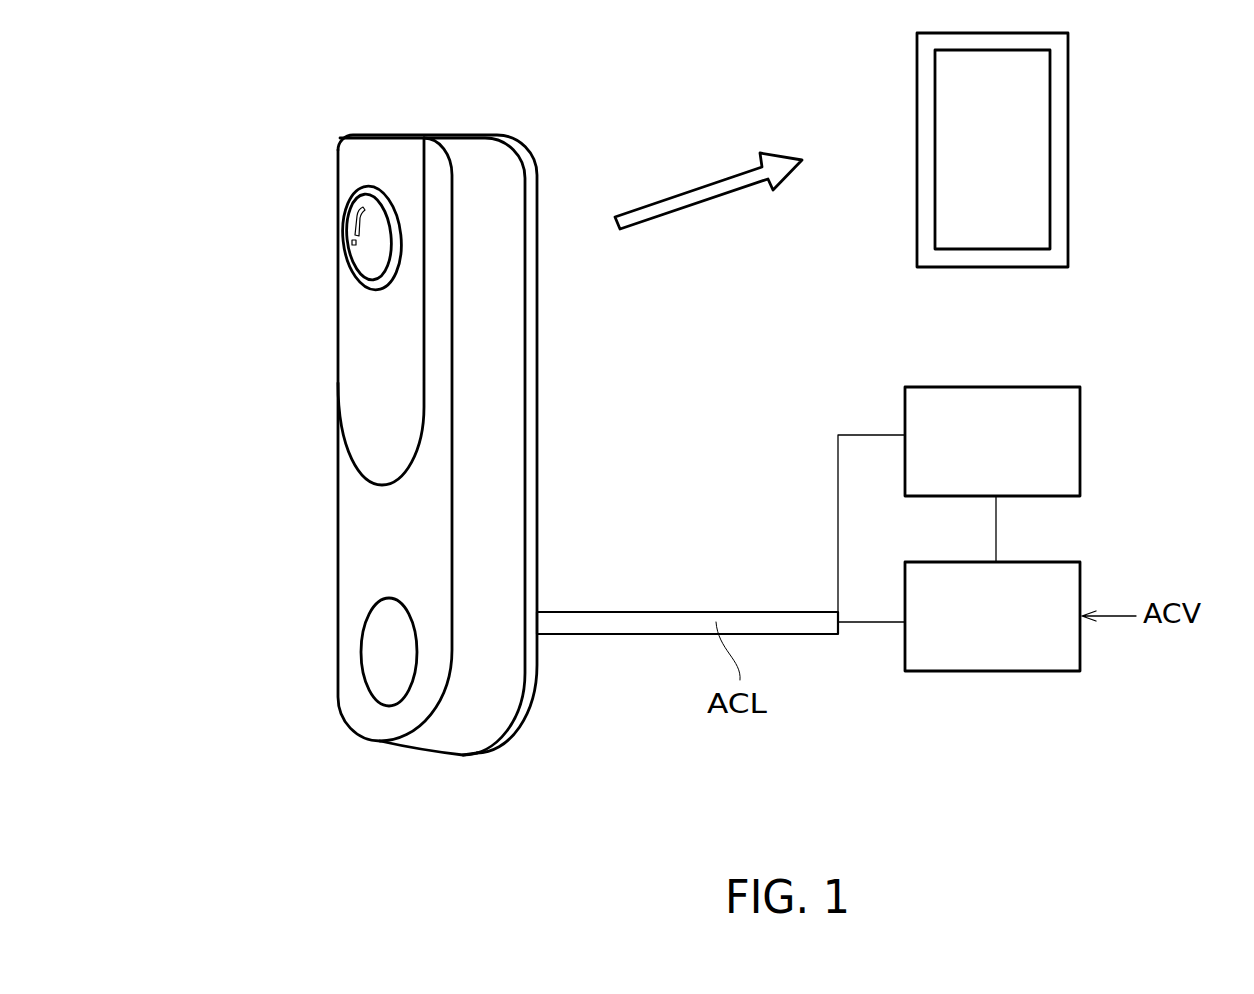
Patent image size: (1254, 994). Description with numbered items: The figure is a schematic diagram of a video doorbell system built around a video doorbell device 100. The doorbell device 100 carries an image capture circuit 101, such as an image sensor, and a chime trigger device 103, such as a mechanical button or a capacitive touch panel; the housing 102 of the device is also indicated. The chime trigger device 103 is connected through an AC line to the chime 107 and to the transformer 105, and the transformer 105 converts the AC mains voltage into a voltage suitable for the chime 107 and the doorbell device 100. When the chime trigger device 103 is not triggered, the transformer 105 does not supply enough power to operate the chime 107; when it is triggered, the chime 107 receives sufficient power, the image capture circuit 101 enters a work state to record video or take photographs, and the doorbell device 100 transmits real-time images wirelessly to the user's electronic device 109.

The video doorbell device 100 is at (427, 108).
The image capture circuit 101 is at (348, 215).
The housing 102 is at (358, 545).
The chime trigger device 103 is at (378, 658).
The transformer 105 is at (1081, 576).
The chime 107 is at (1081, 428).
The user's electronic device 109 is at (1069, 146).